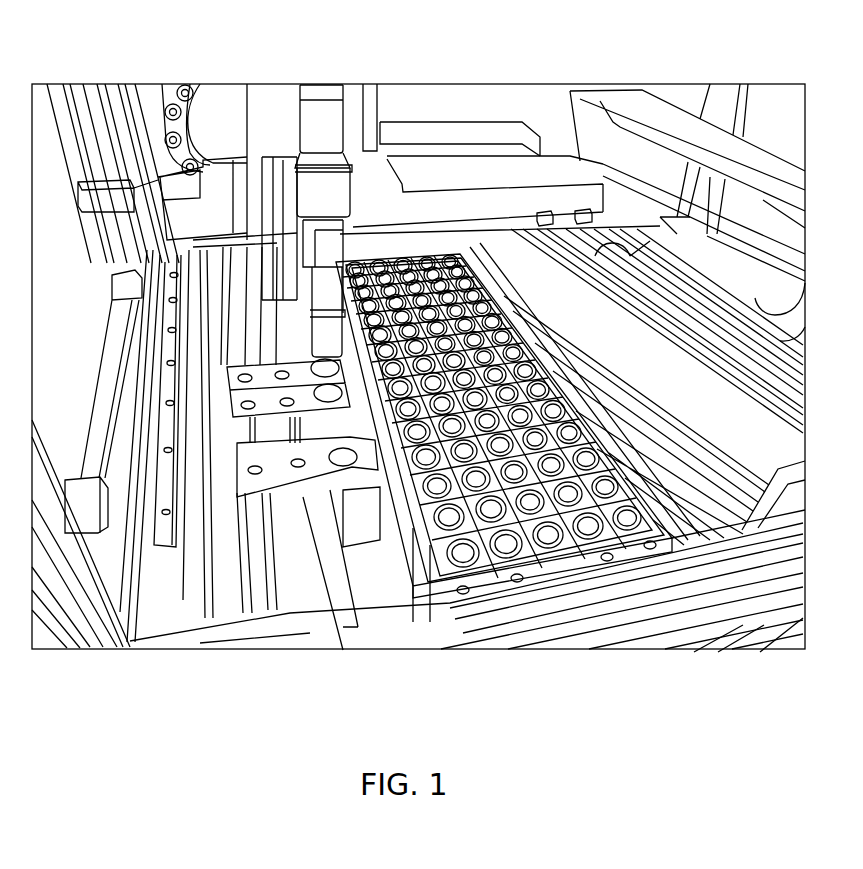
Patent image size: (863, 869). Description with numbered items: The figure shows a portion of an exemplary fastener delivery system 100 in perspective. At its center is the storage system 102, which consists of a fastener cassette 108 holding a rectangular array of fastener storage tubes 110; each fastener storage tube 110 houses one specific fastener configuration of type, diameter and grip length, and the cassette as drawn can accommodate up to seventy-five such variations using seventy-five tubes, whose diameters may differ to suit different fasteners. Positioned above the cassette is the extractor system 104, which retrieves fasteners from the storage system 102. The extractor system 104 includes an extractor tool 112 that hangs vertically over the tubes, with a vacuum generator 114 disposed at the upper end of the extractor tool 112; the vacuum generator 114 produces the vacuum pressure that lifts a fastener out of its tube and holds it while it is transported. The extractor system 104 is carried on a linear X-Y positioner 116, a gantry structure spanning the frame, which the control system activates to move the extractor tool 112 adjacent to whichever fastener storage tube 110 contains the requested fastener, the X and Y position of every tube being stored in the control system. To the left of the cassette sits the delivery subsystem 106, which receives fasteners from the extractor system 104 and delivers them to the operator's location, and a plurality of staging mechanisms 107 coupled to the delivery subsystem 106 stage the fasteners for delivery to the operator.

The fastener delivery system 100 is at (760, 60).
The storage system 102 is at (521, 498).
The extractor system 104 is at (353, 226).
The delivery subsystem 106 is at (316, 483).
The staging mechanisms 107 is at (262, 414).
The fastener cassette 108 is at (587, 548).
The fastener storage tubes 110 is at (507, 537).
The extractor tool 112 is at (250, 280).
The vacuum generator 114 is at (290, 165).
The linear X-Y positioner 116 is at (457, 201).